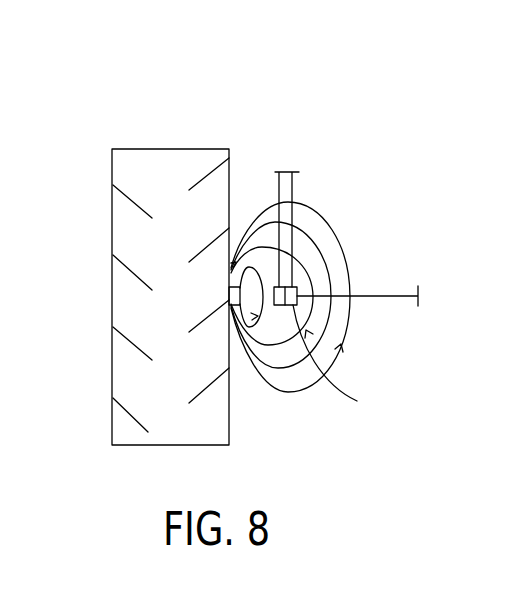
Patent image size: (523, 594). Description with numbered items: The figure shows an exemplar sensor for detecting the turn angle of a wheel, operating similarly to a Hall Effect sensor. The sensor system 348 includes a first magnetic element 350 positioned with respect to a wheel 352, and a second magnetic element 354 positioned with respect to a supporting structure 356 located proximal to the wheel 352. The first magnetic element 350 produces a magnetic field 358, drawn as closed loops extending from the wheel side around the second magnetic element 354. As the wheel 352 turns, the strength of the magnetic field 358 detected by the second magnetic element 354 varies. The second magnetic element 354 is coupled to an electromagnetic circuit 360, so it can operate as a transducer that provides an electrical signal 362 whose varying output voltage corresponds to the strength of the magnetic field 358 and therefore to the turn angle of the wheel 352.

The sensor system 348 is at (218, 91).
The first magnetic element 350 is at (240, 287).
The wheel 352 is at (130, 377).
The second magnetic element 354 is at (281, 305).
The supporting structure 356 is at (297, 186).
The magnetic field 358 is at (370, 249).
The electromagnetic circuit 360 is at (346, 361).
The electrical signal 362 is at (387, 296).